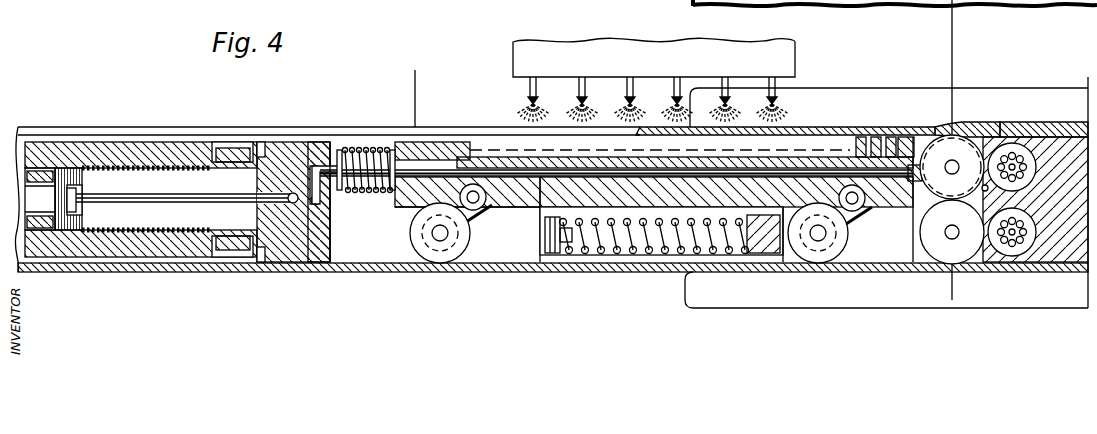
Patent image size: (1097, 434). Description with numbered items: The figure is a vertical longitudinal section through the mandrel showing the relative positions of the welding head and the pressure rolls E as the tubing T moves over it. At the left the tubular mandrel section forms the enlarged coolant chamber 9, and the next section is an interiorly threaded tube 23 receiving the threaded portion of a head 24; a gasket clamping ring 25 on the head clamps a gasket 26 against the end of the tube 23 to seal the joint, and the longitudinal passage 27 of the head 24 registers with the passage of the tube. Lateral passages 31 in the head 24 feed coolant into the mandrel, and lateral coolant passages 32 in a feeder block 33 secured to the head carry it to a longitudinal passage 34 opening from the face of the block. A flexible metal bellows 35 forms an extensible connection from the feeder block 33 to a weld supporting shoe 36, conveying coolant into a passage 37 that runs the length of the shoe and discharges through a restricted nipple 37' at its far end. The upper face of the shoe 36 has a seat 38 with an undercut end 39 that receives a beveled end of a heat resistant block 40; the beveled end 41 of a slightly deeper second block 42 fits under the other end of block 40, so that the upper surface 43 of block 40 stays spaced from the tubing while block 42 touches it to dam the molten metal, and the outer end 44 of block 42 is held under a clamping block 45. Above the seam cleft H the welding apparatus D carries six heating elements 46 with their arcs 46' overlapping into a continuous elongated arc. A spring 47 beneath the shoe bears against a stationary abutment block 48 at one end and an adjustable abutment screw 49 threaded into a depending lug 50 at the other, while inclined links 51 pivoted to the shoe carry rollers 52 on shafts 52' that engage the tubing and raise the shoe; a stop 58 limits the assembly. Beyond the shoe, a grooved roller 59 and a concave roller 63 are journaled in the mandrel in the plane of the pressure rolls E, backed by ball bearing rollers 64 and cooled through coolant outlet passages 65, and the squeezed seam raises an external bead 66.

The coolant chamber 9 is at (58, 170).
The interiorly threaded tube 23 is at (100, 148).
The head 24 is at (285, 150).
The gasket clamping ring 25 is at (225, 163).
The gasket 26 is at (222, 248).
The longitudinal passage 27 is at (152, 196).
The lateral passages 31 is at (291, 203).
The lateral coolant passages 32 is at (314, 205).
The feeder block 33 is at (330, 237).
The longitudinal passage 34 is at (334, 170).
The flexible metal bellows 35 is at (362, 158).
The weld supporting shoe 36 is at (414, 150).
The passage 37 is at (616, 135).
The restricted nipple 37' is at (880, 258).
The seat 38 is at (517, 160).
The undercut end 39 is at (462, 149).
The heat resistant block 40 is at (527, 138).
The beveled end 41 is at (612, 138).
The second heat resistant block 42 is at (667, 137).
The upper surface 43 is at (553, 138).
The outer end 44 is at (847, 148).
The clamping block 45 is at (860, 140).
The heating elements 46 is at (711, 86).
The spray fan 46' is at (760, 86).
The spring 47 is at (627, 248).
The stationary abutment block 48 is at (762, 245).
The adjustable abutment screw 49 is at (553, 256).
The depending lug 50 is at (505, 209).
The inclined links 51 is at (452, 205).
The rollers 52 is at (629, 268).
The shafts 52' is at (629, 289).
The stop block 58 is at (908, 137).
The roller 59 is at (972, 150).
The roller 63 is at (965, 245).
The ball bearing rollers 64 is at (1035, 150).
The coolant outlet passages 65 is at (1018, 160).
The external bead 66 is at (958, 124).
The tubing T is at (193, 272).
The seam cleft H is at (416, 89).
The welding apparatus D is at (551, 46).
The pressure rolls E is at (918, 302).